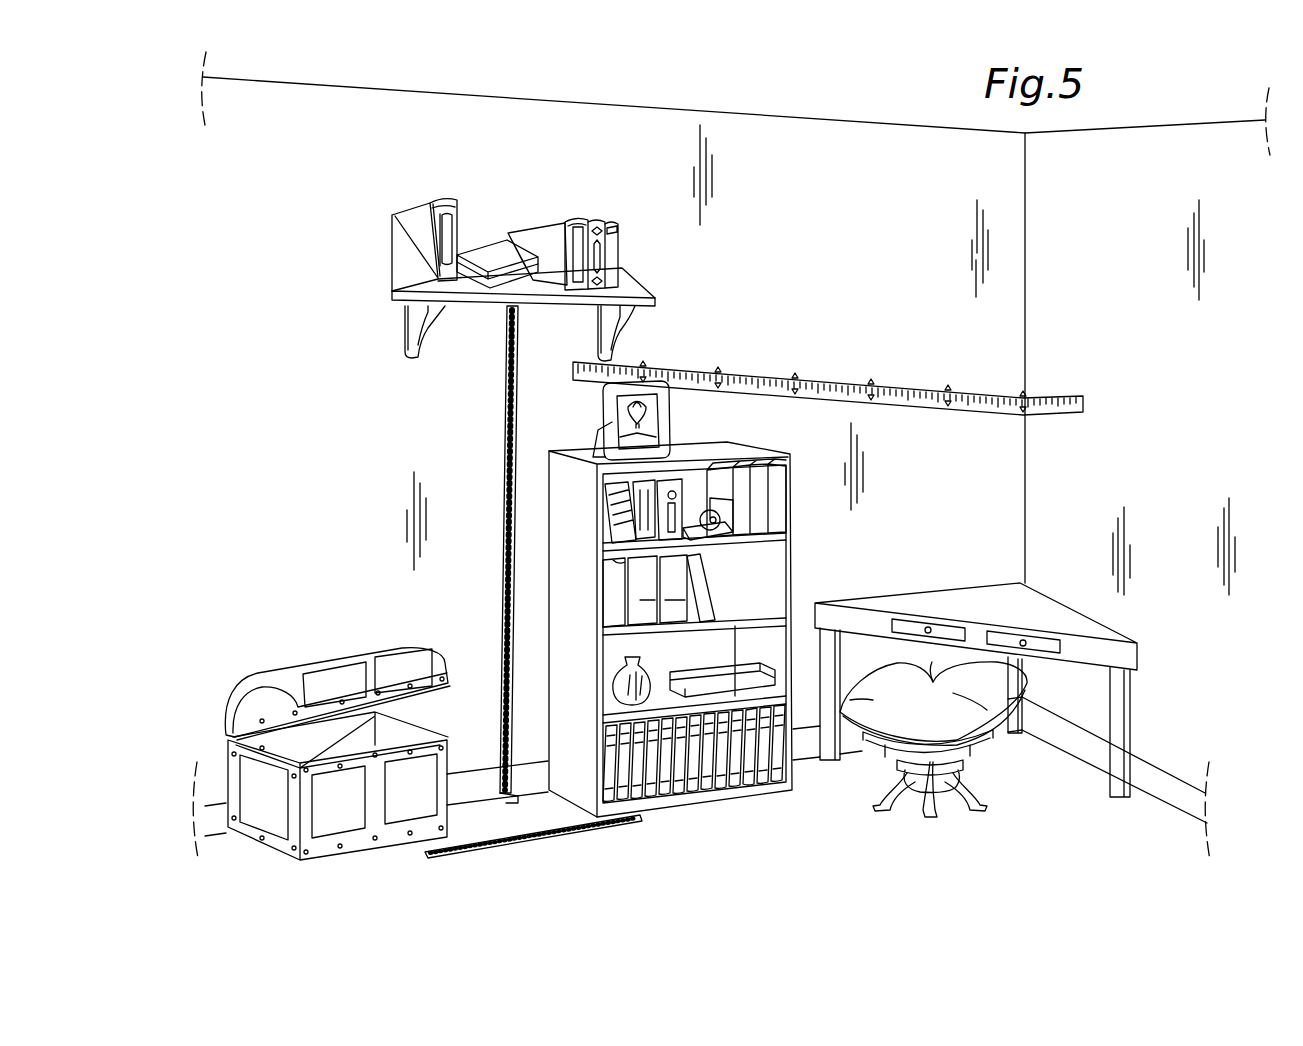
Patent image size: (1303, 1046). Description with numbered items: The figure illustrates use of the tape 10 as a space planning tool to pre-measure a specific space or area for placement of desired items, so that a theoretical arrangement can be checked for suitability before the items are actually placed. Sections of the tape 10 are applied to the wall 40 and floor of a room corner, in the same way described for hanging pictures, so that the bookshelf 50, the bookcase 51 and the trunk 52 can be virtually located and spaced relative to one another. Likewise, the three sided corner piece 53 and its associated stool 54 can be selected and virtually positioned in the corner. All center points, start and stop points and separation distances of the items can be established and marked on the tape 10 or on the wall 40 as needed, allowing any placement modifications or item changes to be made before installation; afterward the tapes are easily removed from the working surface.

The tape 10 is at (857, 380).
The wall 40 is at (838, 215).
The bookshelf 50 is at (553, 306).
The bookcase 51 is at (773, 577).
The trunk 52 is at (318, 668).
The three sided corner piece 53 is at (1032, 597).
The stool 54 is at (942, 721).